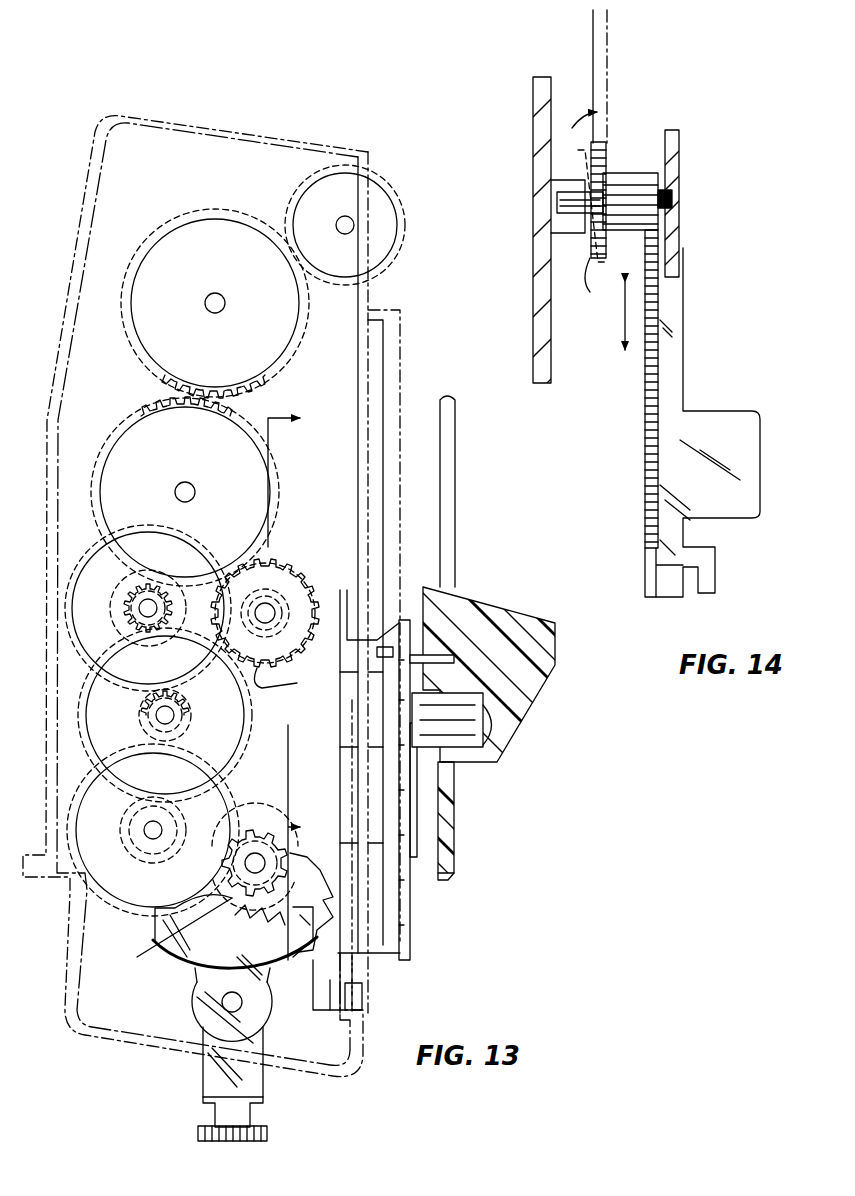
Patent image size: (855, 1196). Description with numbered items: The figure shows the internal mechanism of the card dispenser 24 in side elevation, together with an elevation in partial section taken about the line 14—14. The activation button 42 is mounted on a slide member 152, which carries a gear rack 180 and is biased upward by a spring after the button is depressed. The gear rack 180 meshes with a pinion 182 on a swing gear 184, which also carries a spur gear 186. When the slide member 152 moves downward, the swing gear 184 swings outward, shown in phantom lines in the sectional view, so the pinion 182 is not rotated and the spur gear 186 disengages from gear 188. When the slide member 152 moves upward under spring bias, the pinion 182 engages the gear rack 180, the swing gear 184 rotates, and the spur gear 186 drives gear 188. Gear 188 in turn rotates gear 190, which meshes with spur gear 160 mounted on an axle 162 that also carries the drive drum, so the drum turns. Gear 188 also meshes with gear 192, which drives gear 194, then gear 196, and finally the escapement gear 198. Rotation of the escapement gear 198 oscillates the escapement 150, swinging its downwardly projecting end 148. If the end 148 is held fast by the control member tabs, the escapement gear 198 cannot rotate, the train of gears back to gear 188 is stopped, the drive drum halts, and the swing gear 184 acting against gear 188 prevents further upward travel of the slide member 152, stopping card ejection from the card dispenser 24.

In FIG. 13, the card dispenser 24 is at (396, 142).
In FIG. 13, the activation button 42 is at (528, 618).
In FIG. 13, the end of escapement 148 is at (242, 1122).
In FIG. 13, the escapement 150 is at (213, 1067).
In FIG. 13, the slide member 152 is at (400, 848).
In FIG. 14, the slide member 152 is at (683, 390).
In FIG. 13, the spur gear 160 is at (386, 206).
In FIG. 13, the axle 162 is at (352, 228).
In FIG. 13, the gear rack 180 is at (298, 620).
In FIG. 14, the gear rack 180 is at (660, 312).
In FIG. 13, the pinion 182 is at (268, 592).
In FIG. 14, the pinion 182 is at (660, 176).
In FIG. 13, the swing gear 184 is at (305, 591).
In FIG. 14, the swing gear 184 is at (635, 240).
In FIG. 13, the spur gear 186 is at (326, 641).
In FIG. 14, the spur gear 186 is at (588, 232).
In FIG. 13, the gear 188 is at (243, 472).
In FIG. 14, the gear 188 is at (592, 35).
In FIG. 13, the gear 190 is at (200, 228).
In FIG. 13, the gear 192 is at (110, 567).
In FIG. 13, the gear 194 is at (126, 727).
In FIG. 13, the gear 196 is at (116, 828).
In FIG. 13, the escapement gear 198 is at (225, 896).
In FIG. 13, the section line 14- 14 is at (302, 682).